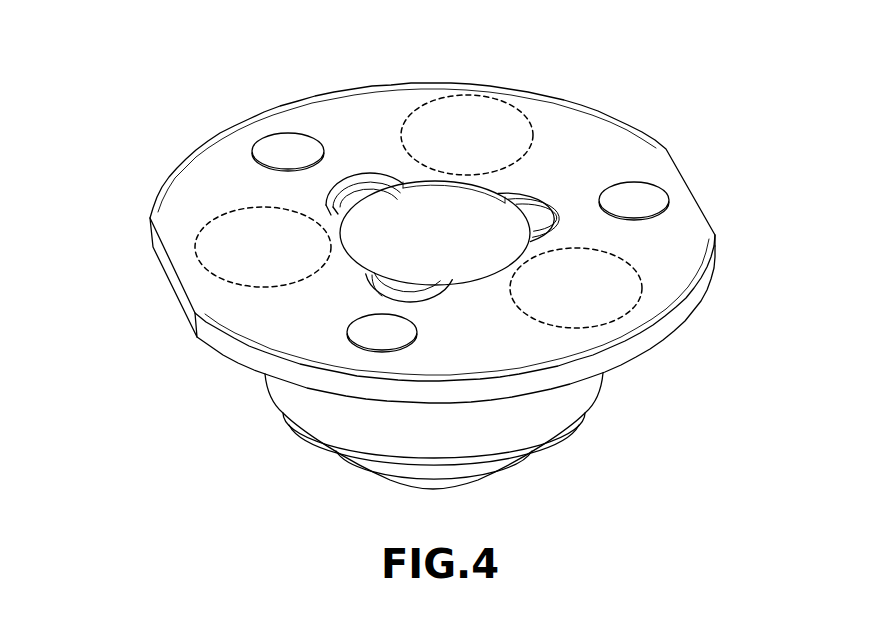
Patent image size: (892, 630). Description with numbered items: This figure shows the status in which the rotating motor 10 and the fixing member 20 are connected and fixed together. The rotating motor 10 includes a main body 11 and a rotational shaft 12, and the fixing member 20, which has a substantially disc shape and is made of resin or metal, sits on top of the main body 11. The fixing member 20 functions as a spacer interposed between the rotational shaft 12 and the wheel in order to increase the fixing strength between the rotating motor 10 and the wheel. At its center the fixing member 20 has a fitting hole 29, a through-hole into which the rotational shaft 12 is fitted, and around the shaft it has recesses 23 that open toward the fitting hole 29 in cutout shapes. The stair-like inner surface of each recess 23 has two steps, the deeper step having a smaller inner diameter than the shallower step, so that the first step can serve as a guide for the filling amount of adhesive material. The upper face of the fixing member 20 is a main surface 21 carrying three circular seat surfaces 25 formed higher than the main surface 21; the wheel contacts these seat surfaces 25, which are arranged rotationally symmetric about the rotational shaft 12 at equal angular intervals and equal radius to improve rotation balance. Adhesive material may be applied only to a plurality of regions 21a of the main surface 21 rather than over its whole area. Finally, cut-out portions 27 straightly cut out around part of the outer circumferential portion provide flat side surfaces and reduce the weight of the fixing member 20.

The rotating motor 10 is at (416, 431).
The main body 11 is at (575, 395).
The rotational shaft 12 is at (435, 158).
The fixing member 20 is at (444, 228).
The main surface 21 is at (235, 160).
The regions 21a is at (210, 222).
The recesses 23 is at (363, 173).
The seat surfaces 25 is at (290, 148).
The cut-out portions 27 is at (173, 277).
The fitting hole 29 is at (443, 177).